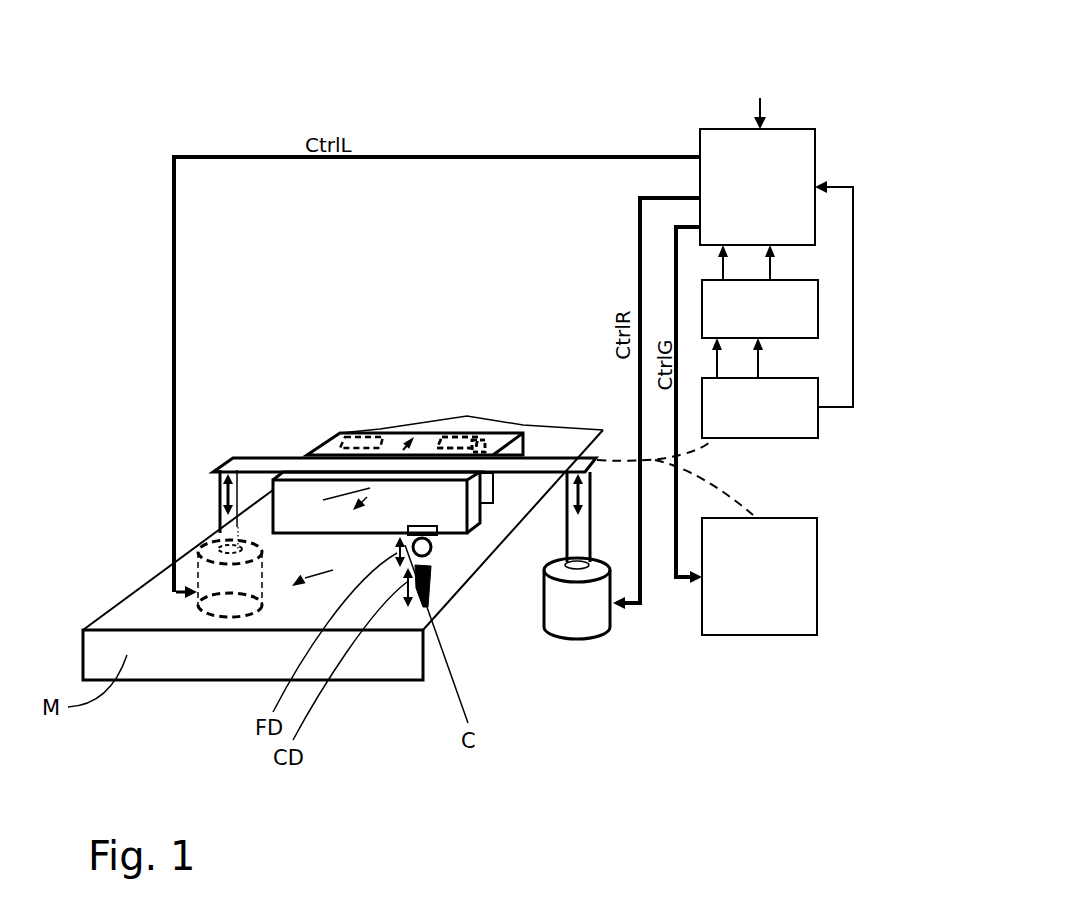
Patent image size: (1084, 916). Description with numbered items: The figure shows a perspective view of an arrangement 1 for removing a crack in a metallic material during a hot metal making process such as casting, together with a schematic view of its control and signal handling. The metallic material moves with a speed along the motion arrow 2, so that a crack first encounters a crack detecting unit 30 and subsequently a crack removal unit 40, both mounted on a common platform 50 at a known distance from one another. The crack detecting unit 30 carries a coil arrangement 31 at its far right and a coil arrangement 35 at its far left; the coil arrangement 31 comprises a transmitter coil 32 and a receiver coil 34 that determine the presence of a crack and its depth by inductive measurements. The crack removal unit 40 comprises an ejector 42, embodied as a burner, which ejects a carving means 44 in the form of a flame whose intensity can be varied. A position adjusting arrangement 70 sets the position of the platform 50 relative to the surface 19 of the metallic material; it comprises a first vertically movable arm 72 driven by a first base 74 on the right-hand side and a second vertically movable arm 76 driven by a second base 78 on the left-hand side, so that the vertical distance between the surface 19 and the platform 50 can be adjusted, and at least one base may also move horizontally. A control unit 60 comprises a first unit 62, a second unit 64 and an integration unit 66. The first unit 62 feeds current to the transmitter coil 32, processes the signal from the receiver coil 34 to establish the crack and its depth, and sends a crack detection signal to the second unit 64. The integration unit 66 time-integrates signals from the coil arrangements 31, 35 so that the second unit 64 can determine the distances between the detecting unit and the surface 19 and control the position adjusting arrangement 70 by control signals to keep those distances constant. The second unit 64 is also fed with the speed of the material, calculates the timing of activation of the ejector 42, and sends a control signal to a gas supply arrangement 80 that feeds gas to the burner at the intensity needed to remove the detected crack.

The arrangement 1 is at (442, 106).
The motion arrow 2 is at (321, 572).
The surface 19 is at (145, 605).
The crack detecting unit 30 is at (323, 456).
The coil arrangement 31 is at (537, 352).
The transmitter coil 32 is at (445, 435).
The receiver coil 34 is at (480, 435).
The coil arrangement 35 is at (360, 428).
The crack removal unit 40 is at (273, 507).
The ejector 42 is at (440, 537).
The carving means 44 is at (432, 548).
The platform 50 is at (288, 460).
The control unit 60 is at (823, 287).
The first unit 62 is at (773, 439).
The second unit 64 is at (817, 167).
The integration unit 66 is at (807, 308).
The position adjusting arrangement 70 is at (206, 458).
The first vertically movable arm 72 is at (583, 528).
The first base 74 is at (597, 618).
The second vertically movable arm 76 is at (220, 492).
The second base 78 is at (217, 613).
The gas supply arrangement 80 is at (812, 603).